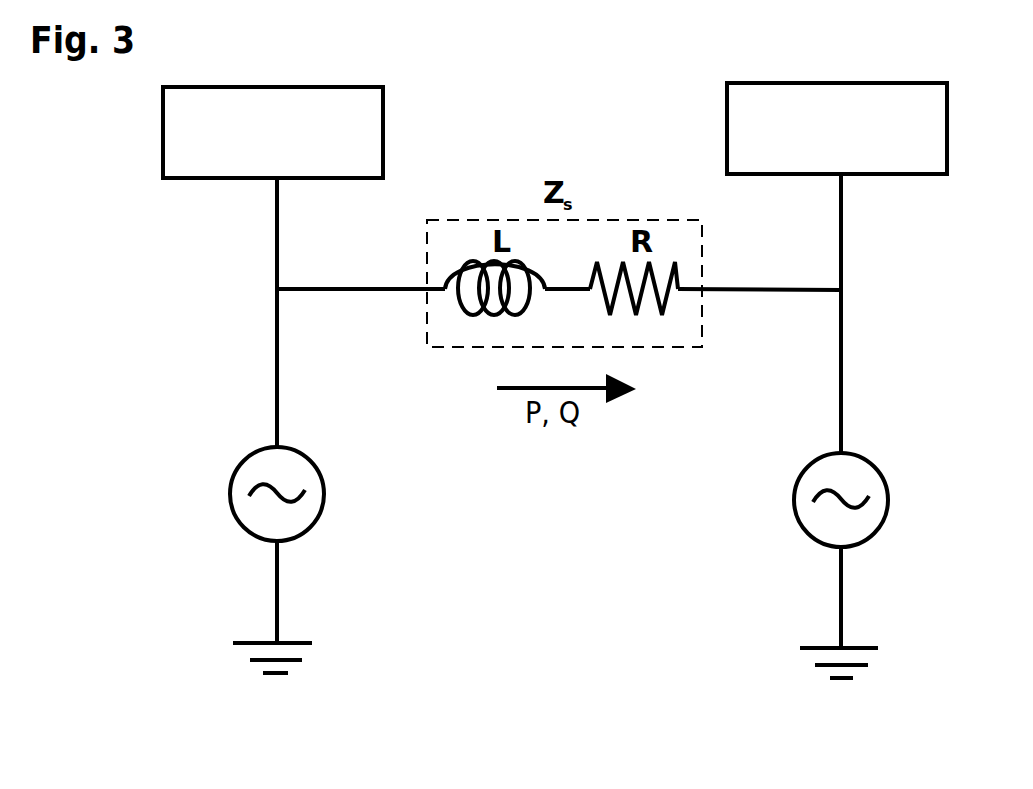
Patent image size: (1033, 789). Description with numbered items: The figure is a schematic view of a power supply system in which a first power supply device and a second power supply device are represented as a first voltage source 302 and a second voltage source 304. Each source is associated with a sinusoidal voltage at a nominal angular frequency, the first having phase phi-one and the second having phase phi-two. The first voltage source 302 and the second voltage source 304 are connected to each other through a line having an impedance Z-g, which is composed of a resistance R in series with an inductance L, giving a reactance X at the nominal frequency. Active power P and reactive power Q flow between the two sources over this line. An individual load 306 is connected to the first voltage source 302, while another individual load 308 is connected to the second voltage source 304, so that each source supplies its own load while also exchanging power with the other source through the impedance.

The first voltage source 302 is at (298, 518).
The second voltage source 304 is at (860, 520).
The individual load 306 is at (252, 162).
The individual load 308 is at (817, 157).